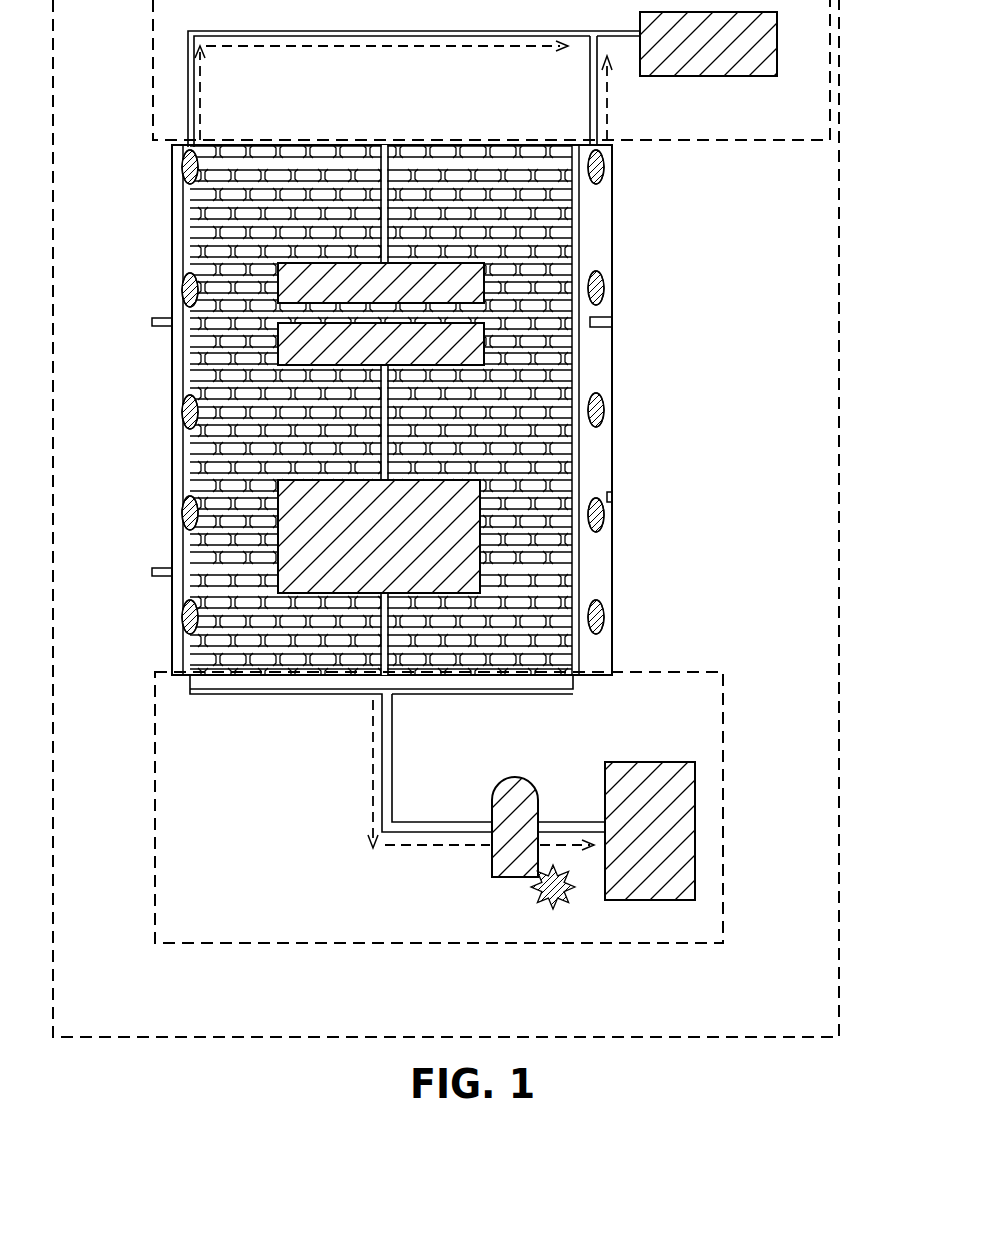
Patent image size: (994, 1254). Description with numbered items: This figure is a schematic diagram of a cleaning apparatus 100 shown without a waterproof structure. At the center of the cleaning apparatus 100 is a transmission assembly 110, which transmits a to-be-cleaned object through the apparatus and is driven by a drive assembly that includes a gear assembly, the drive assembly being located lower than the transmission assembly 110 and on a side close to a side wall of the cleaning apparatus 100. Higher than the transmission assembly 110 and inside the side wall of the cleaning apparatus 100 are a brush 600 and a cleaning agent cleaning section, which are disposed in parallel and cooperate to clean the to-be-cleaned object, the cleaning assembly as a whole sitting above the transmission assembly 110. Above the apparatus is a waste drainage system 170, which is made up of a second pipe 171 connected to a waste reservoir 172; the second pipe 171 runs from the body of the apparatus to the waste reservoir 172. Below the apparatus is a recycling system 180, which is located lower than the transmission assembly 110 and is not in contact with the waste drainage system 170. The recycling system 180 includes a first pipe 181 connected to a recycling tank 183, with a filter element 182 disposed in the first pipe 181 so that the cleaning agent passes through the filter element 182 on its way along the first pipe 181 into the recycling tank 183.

The cleaning apparatus 100 is at (839, 595).
The transmission assembly 110 is at (522, 373).
The brush 600 is at (493, 279).
The waste drainage system 170 is at (153, 141).
The second pipe 171 is at (187, 70).
The waste reservoir 172 is at (714, 76).
The recycling system 180 is at (160, 945).
The first pipe 181 is at (237, 692).
The filter element 182 is at (493, 862).
The recycling tank 183 is at (633, 762).